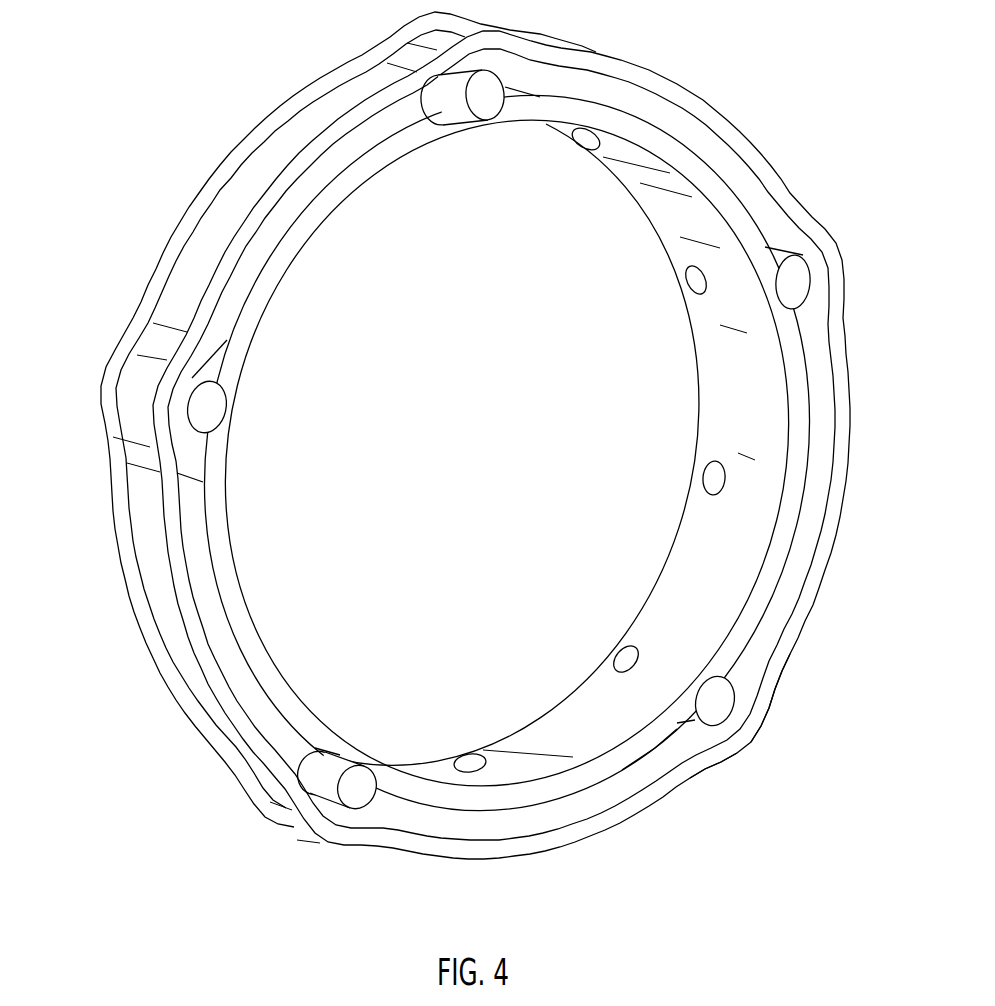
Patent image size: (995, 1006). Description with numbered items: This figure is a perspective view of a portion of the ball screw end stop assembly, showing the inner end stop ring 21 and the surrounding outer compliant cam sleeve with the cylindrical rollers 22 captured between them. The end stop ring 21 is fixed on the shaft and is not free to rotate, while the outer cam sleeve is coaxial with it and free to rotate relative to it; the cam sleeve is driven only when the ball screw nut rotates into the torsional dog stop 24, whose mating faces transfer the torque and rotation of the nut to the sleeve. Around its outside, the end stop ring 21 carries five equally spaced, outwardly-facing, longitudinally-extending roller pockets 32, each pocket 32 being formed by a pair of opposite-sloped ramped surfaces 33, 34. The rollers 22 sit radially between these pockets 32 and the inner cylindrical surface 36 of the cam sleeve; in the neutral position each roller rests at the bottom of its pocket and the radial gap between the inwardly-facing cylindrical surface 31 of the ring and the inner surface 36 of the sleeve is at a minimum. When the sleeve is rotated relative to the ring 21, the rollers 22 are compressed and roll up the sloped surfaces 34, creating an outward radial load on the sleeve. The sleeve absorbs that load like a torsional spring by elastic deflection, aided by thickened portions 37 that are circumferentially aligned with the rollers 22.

The end stop ring 21 is at (315, 262).
The cylindrical rollers 22 is at (216, 404).
The torsional dog stop 24 is at (798, 164).
The inwardly-facing cylindrical surface 31 is at (680, 575).
The roller pockets 32 is at (757, 667).
The inclined surface 33 is at (185, 449).
The inclined surface 34 is at (213, 357).
The inner cylindrical surface 36 is at (665, 748).
The thickened portions 37 is at (767, 748).